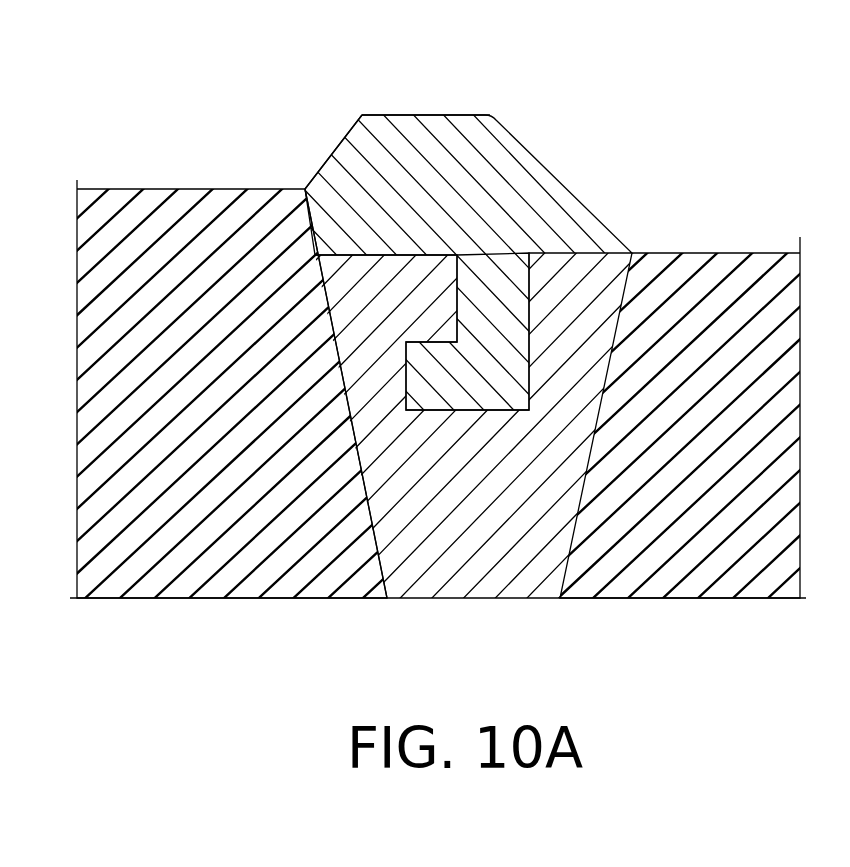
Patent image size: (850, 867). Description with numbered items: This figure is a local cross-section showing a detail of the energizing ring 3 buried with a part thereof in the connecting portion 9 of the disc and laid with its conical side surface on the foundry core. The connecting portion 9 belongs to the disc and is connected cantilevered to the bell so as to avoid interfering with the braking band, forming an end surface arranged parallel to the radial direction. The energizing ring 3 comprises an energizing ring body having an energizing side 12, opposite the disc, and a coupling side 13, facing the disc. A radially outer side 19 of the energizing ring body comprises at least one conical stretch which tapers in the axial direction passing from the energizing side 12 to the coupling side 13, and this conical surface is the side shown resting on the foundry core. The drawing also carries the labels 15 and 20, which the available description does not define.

The energizing ring 3 is at (455, 172).
The connecting portion 9 is at (568, 343).
The energizing side 12 is at (433, 115).
The coupling side 13 is at (388, 256).
The locating tongue / slot filler 15 is at (495, 304).
The radially outer side 19 is at (302, 236).
The chamfered side surface 20 is at (305, 192).